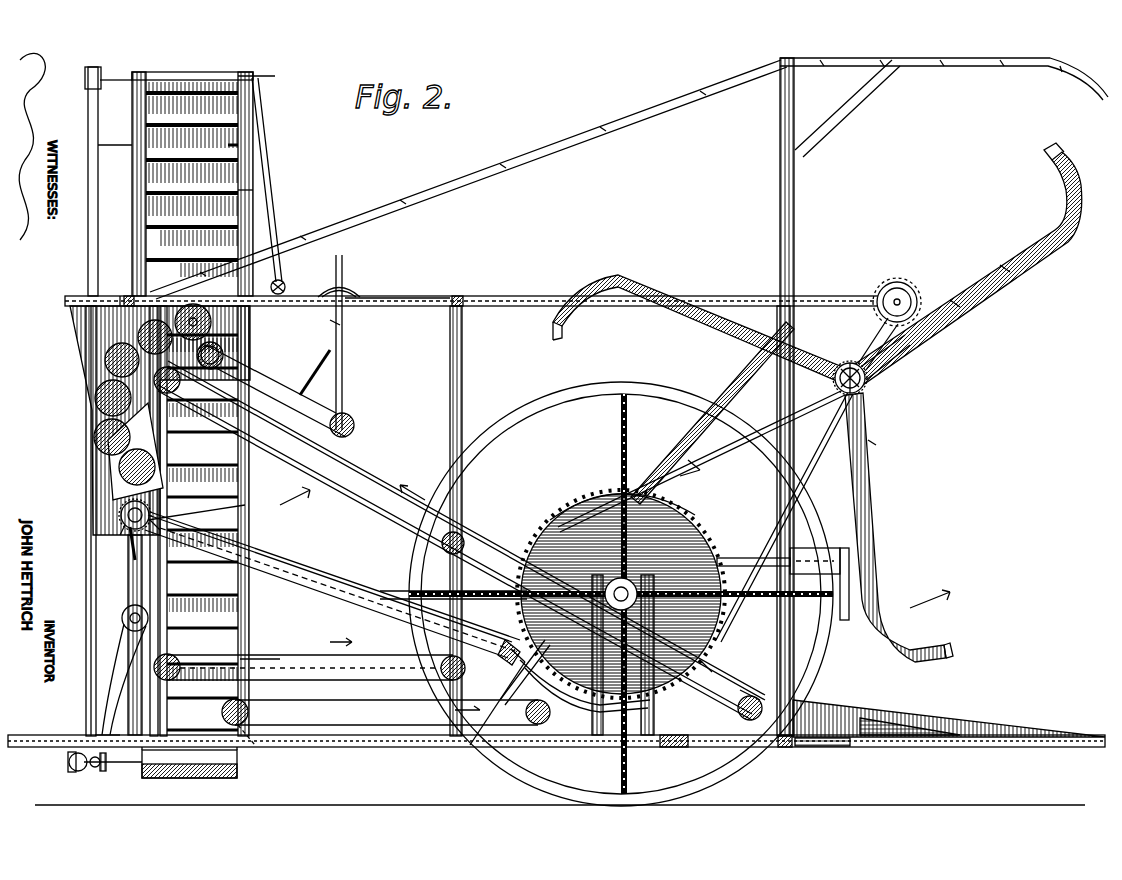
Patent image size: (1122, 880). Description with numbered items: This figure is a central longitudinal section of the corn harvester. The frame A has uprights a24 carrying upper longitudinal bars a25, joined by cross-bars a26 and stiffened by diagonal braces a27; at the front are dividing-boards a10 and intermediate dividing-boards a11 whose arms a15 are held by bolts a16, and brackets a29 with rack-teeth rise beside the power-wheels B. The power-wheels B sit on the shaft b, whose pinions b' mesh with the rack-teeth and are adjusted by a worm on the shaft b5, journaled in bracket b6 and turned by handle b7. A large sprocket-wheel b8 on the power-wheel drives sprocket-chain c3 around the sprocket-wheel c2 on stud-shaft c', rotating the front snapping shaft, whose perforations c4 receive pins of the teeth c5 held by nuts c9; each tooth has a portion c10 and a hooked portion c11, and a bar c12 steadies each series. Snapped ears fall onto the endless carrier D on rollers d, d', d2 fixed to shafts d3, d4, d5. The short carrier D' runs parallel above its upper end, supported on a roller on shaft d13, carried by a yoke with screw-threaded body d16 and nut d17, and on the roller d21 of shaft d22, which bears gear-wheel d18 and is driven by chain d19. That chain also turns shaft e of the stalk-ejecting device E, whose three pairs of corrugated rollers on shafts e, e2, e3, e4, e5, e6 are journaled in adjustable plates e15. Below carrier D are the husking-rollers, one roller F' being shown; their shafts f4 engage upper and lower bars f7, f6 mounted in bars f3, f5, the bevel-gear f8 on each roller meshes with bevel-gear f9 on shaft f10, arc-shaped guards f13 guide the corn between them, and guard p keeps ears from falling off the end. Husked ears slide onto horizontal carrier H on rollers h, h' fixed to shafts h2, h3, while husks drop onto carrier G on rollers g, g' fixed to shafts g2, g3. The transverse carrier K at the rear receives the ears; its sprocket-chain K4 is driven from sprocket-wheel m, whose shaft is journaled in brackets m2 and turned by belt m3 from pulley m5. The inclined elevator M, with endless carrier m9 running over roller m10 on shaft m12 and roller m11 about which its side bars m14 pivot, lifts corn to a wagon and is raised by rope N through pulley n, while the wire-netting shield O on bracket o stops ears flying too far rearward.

The frame A is at (738, 296).
The uprights a24 is at (470, 370).
The cross-bars a26 is at (452, 296).
The upper longitudinal bars a25 is at (390, 296).
The diagonal braces a27 is at (712, 395).
The upwardly-extending brackets a29 is at (690, 710).
The dividing-boards a10 is at (960, 720).
The intermediate dividing-boards a11 is at (905, 748).
The rearwardly-extending arms a15 is at (825, 748).
The bolts a16 is at (785, 748).
The bracket o is at (794, 172).
The shield O is at (560, 138).
The inclined elevator M is at (180, 72).
The shaft m12 is at (118, 78).
The roller m10 is at (260, 76).
The roller m11 is at (132, 145).
The endless carrier m9 is at (228, 147).
The side bars m14 is at (253, 192).
The sprocket-wheel m is at (125, 765).
The pulley m5 is at (122, 622).
The belt m3 is at (108, 670).
The brackets m2 is at (100, 735).
The rope N is at (272, 218).
The pulley n is at (286, 282).
The screw-threaded portion d16 is at (360, 252).
The nut d17 is at (380, 264).
The gear-wheel d18 is at (350, 352).
The chain d19 is at (352, 410).
The roller d21 is at (200, 322).
The shaft d22 is at (223, 355).
The shaft d13 is at (356, 430).
The roller d2 is at (197, 355).
The shaft d5 is at (175, 393).
The shaft d4 is at (442, 545).
The roller d' is at (453, 603).
The shaft d3 is at (738, 708).
The roller d is at (750, 677).
The second endless carrier D' is at (287, 391).
The endless carrier D is at (461, 540).
The stalk-ejecting device E is at (82, 312).
The shaft e is at (125, 280).
The shaft e2 is at (175, 322).
The plates e15 is at (138, 338).
The shaft e3 is at (105, 365).
The shaft e4 is at (95, 396).
The shaft e5 is at (94, 437).
The shaft e6 is at (119, 465).
The bevel-gear f9 is at (121, 512).
The shaft f10 is at (125, 525).
The shafts f4 is at (130, 535).
The upper bar f7 is at (150, 528).
The bevel-gear f8 is at (180, 514).
The bar f5 is at (210, 530).
The guards f13 is at (315, 570).
The husking-roller F' is at (332, 590).
The bar f3 is at (515, 658).
The lower bar f6 is at (525, 672).
The endless carrier G is at (288, 655).
The roller g' is at (215, 635).
The roller g is at (421, 653).
The shaft g2 is at (410, 668).
The shaft g3 is at (262, 662).
The endless carrier H is at (365, 738).
The roller h' is at (257, 735).
The shaft h3 is at (255, 748).
The roller h is at (549, 739).
The shaft h2 is at (482, 752).
The guard p is at (552, 712).
The transverse endless carrier K is at (205, 770).
The sprocket-chain K4 is at (72, 768).
The power-wheels B is at (600, 378).
The shaft b is at (621, 591).
The sprocket-wheel b8 is at (585, 515).
The pinions b' is at (639, 655).
The shaft b5 is at (715, 660).
The handle b7 is at (845, 560).
The bracket b6 is at (845, 625).
The sprocket-chain c3 is at (770, 555).
The nuts c9 is at (848, 362).
The stud-shaft c' is at (894, 288).
The sprocket-wheel c2 is at (912, 288).
The portion of tooth c10 is at (912, 345).
The perforations c4 is at (880, 378).
The teeth c5 is at (680, 290).
The hooked portion c11 is at (568, 330).
The bar c12 is at (955, 292).